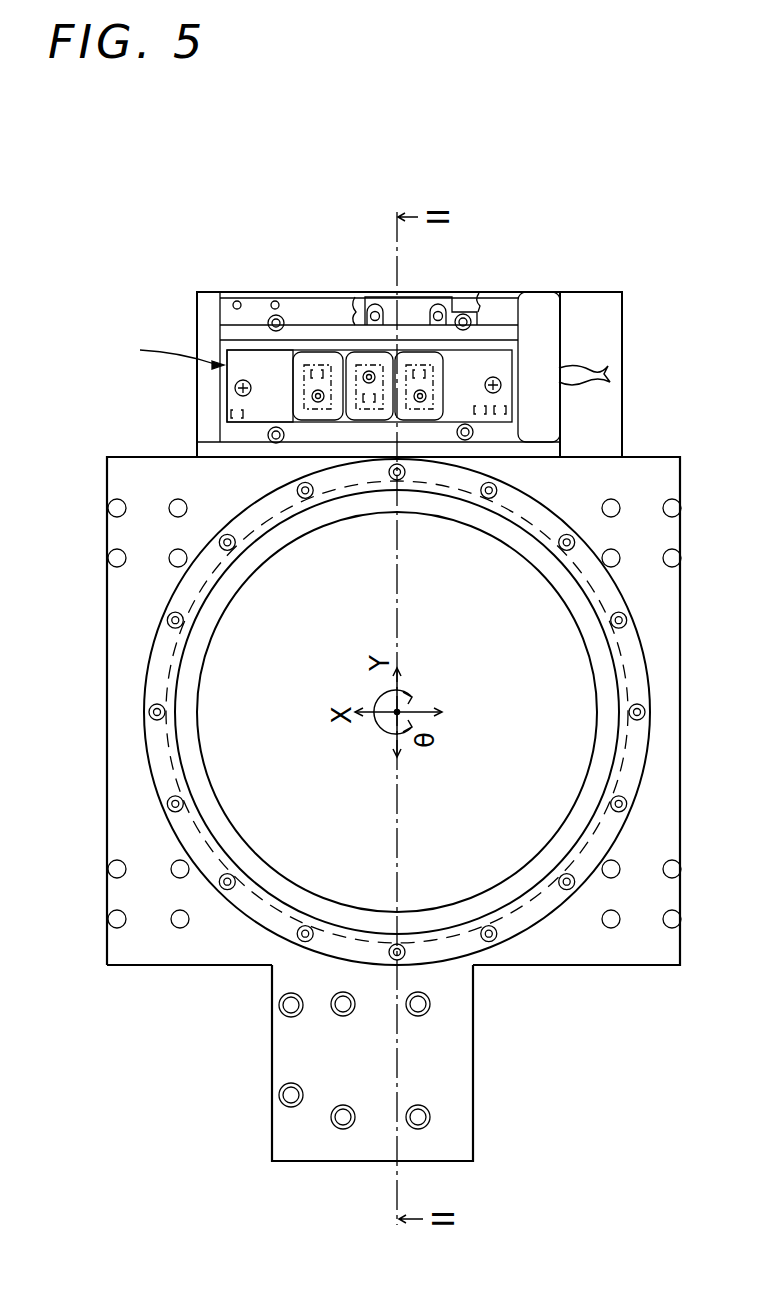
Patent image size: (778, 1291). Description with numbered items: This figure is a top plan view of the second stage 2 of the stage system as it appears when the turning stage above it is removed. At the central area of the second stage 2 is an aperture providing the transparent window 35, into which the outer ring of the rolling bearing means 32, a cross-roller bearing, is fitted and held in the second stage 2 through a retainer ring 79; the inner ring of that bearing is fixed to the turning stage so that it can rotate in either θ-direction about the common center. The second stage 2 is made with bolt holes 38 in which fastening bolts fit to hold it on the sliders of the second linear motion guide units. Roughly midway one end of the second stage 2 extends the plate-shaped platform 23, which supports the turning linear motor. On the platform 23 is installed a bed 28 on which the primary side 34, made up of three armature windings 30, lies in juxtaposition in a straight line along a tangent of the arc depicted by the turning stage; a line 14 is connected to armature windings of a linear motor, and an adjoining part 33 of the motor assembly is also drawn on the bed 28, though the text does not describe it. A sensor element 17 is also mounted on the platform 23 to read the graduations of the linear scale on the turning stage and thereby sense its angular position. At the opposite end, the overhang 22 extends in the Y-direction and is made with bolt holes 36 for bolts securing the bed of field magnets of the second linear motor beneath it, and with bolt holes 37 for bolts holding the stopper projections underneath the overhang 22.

The second stage 2 is at (145, 542).
The line connected to armature windings 14 is at (597, 378).
The sensor element 17 is at (380, 298).
The overhang 22 is at (452, 1083).
The platform 23 is at (593, 313).
The bed 28 is at (280, 367).
The armature windings 30 is at (362, 367).
The rolling bearing means 32 is at (267, 877).
The block 33 is at (263, 378).
The primary side 34 is at (168, 349).
The transparent window 35 is at (496, 652).
The bolt holes 36 is at (343, 1120).
The bolt holes 37 is at (285, 1093).
The bolt holes 38 is at (612, 553).
The retainer ring 79 is at (458, 937).